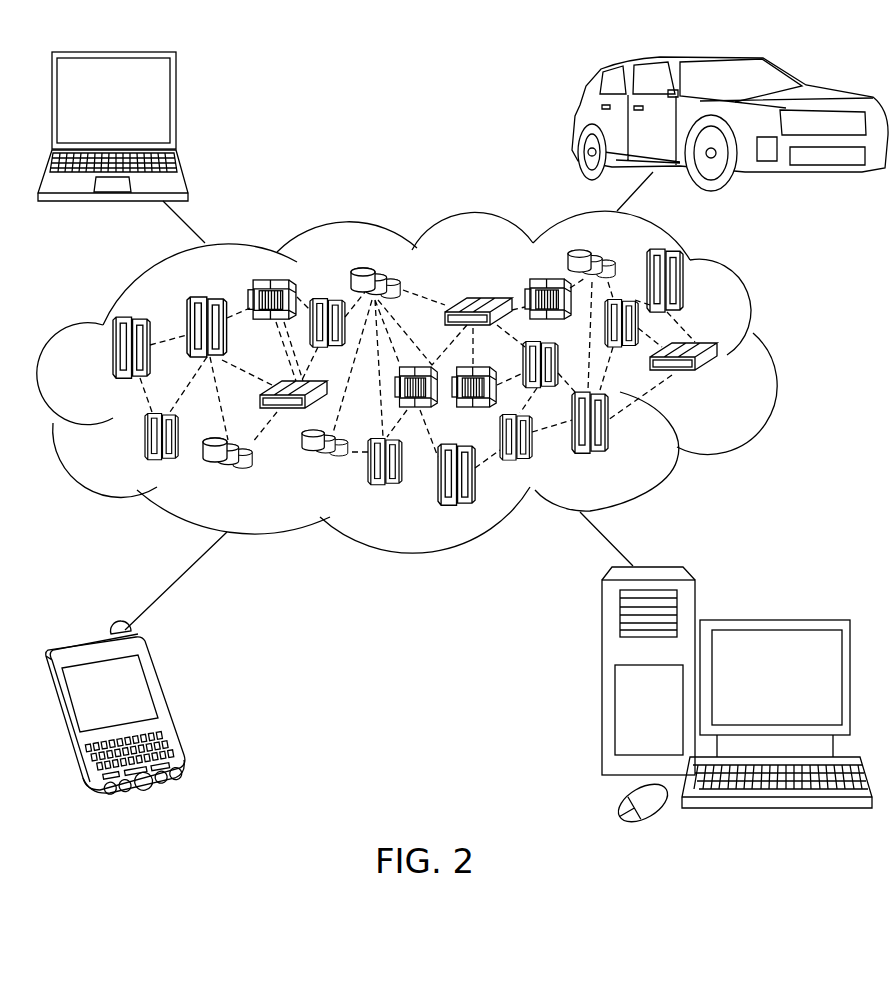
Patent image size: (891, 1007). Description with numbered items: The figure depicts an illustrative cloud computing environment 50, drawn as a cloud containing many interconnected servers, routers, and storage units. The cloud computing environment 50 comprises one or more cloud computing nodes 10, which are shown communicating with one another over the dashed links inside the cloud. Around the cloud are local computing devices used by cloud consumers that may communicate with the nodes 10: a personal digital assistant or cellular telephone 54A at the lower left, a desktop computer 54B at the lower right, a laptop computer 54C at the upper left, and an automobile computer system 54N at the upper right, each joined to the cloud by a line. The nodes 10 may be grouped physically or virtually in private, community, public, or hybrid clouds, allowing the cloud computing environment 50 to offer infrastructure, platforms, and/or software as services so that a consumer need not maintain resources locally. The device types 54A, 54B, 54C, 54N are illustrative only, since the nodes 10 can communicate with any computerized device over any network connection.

The cloud computing node 10 is at (720, 385).
The cloud computing environment 50 is at (777, 357).
The personal digital assistant or cellular telephone 54A is at (167, 703).
The desktop computer 54B is at (773, 620).
The laptop computer 54C is at (177, 107).
The automobile computer system 54N is at (576, 123).